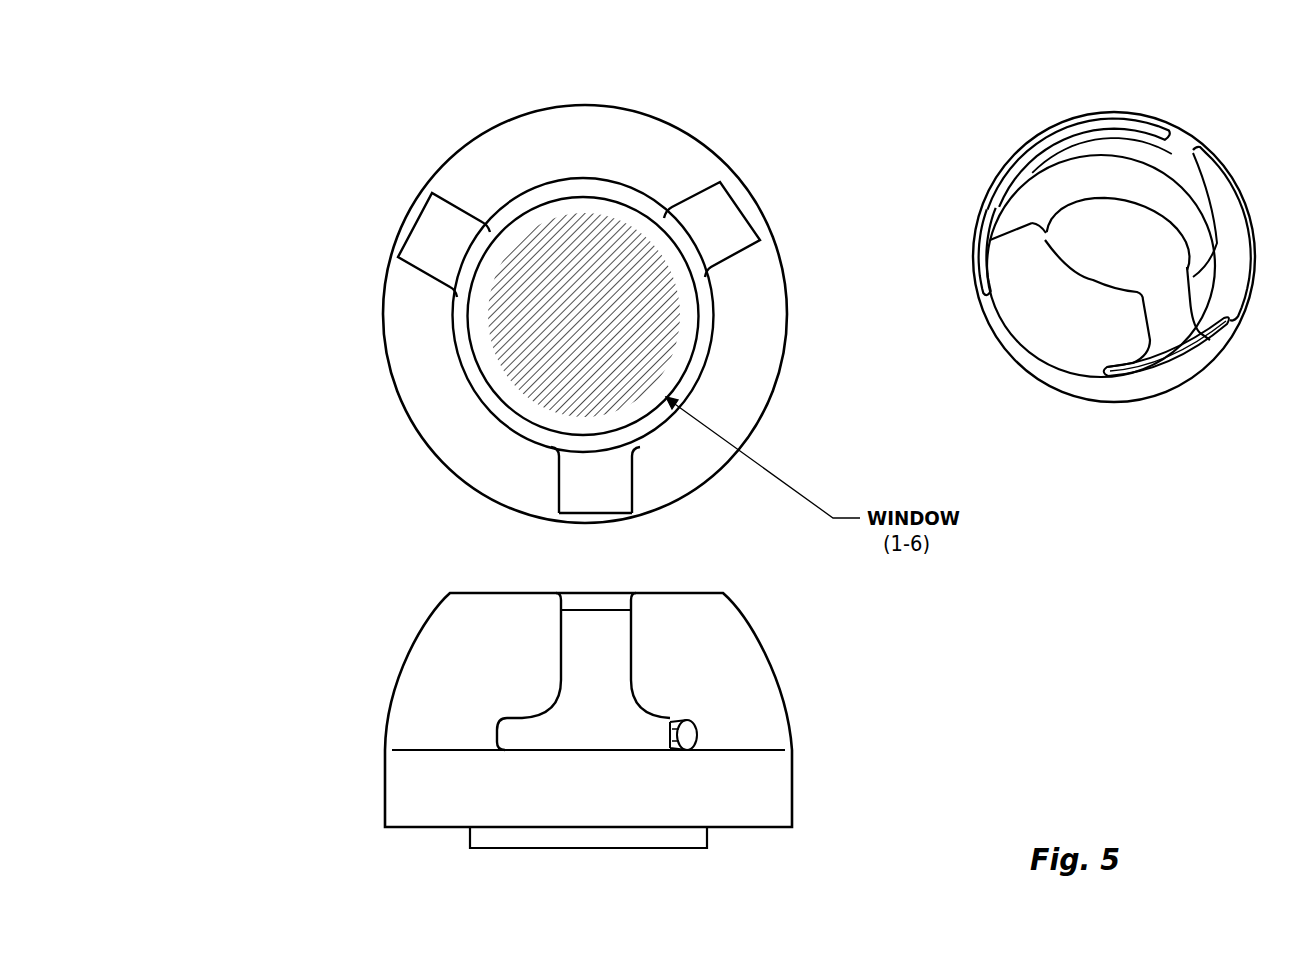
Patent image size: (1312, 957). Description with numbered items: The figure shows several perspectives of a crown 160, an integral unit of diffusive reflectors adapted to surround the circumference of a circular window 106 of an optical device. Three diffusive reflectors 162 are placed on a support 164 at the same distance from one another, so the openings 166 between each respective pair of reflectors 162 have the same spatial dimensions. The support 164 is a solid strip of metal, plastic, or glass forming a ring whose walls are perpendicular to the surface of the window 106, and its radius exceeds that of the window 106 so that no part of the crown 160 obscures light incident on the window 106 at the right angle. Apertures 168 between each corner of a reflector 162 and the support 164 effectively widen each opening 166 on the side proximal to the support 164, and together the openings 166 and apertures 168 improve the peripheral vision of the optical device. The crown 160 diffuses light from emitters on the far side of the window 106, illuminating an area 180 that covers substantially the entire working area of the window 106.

The crown 160 is at (672, 93).
The diffusive reflector 162 is at (516, 142).
The support 164 is at (1162, 378).
The opening 166 is at (707, 220).
The aperture 168 is at (680, 750).
The window 106 is at (690, 843).
The area 180 is at (514, 358).